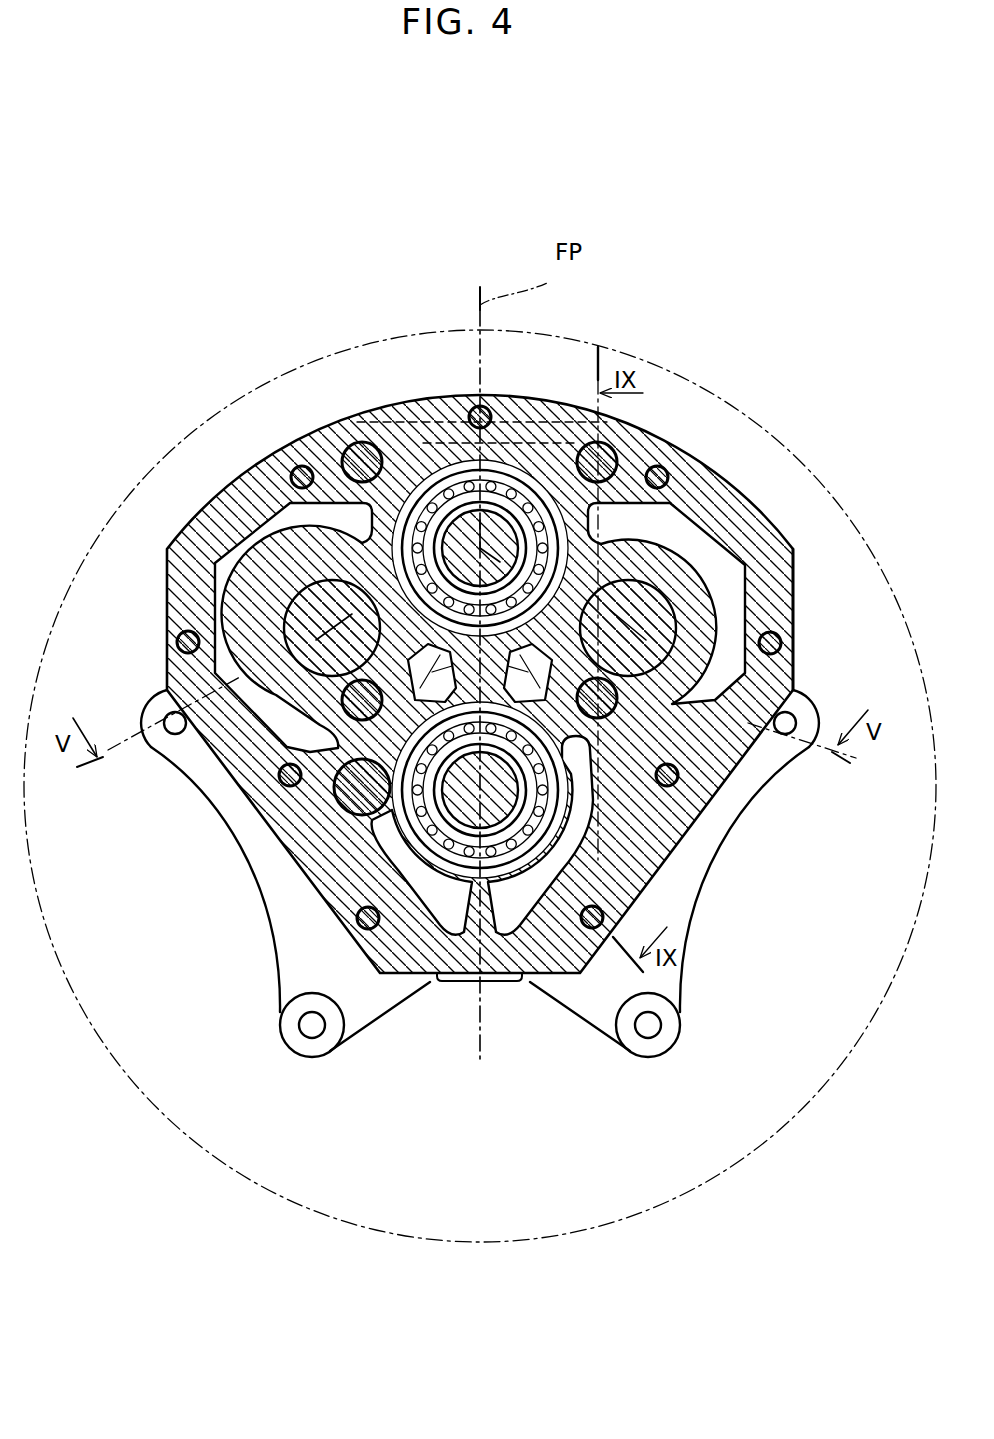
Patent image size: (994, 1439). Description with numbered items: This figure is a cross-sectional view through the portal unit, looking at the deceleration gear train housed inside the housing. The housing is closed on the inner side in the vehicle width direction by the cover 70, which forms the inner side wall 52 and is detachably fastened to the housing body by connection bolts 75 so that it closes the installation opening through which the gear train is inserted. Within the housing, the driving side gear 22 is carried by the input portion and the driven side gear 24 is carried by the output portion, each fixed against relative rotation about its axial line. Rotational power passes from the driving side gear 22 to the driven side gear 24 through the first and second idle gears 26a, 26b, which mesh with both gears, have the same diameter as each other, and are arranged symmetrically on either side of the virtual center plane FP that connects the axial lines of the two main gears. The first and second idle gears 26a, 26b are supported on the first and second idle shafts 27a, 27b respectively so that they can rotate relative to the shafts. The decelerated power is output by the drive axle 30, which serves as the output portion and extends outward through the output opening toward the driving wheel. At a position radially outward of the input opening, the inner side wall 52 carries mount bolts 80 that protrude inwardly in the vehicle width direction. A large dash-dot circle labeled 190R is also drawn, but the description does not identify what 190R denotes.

The driving side gear 22 is at (410, 398).
The driven side gear 24 is at (417, 983).
The first idle gear 26a is at (723, 520).
The second idle gear 26b is at (231, 518).
The first idle shaft 27a is at (660, 593).
The second idle shaft 27b is at (303, 620).
The drive axle 30 is at (494, 795).
The inner side wall 52 is at (773, 580).
The cover 70 is at (797, 607).
The connection bolt 75 is at (293, 468).
The mount bolts 80 is at (344, 432).
The reference circle 190R is at (612, 1228).